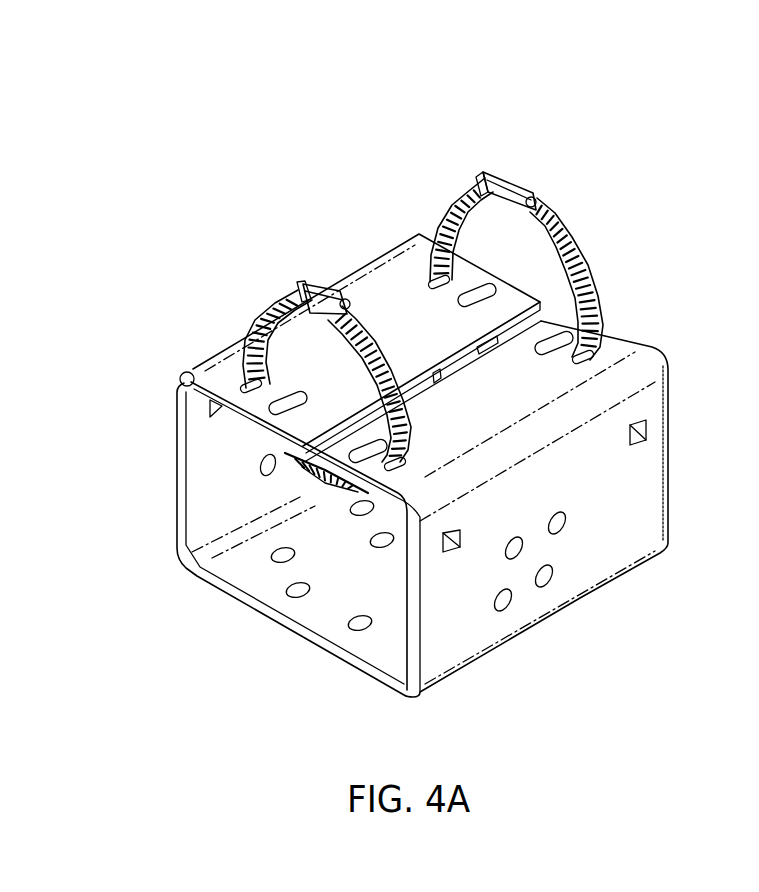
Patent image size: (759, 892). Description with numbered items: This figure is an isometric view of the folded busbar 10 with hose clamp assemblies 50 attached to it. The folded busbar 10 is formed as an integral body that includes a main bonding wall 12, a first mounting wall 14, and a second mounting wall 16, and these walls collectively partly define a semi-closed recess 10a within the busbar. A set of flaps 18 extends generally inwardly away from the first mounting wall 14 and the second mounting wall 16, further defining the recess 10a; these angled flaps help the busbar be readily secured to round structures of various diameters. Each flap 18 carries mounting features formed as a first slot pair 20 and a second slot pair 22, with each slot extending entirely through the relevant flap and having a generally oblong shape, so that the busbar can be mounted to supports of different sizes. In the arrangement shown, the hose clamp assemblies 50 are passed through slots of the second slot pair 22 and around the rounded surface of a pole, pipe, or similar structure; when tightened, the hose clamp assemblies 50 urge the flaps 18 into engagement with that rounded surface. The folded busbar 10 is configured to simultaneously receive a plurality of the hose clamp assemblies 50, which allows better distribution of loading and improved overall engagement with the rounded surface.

The folded busbar 10 is at (355, 219).
The semi-closed recess 10a is at (370, 625).
The main bonding wall 12 is at (327, 603).
The first mounting wall 14 is at (630, 490).
The second mounting wall 16 is at (200, 472).
The flaps 18 is at (400, 312).
The first slot pair 20 is at (470, 290).
The second slot pair 22 is at (432, 282).
The hose clamp assemblies 50 is at (273, 300).